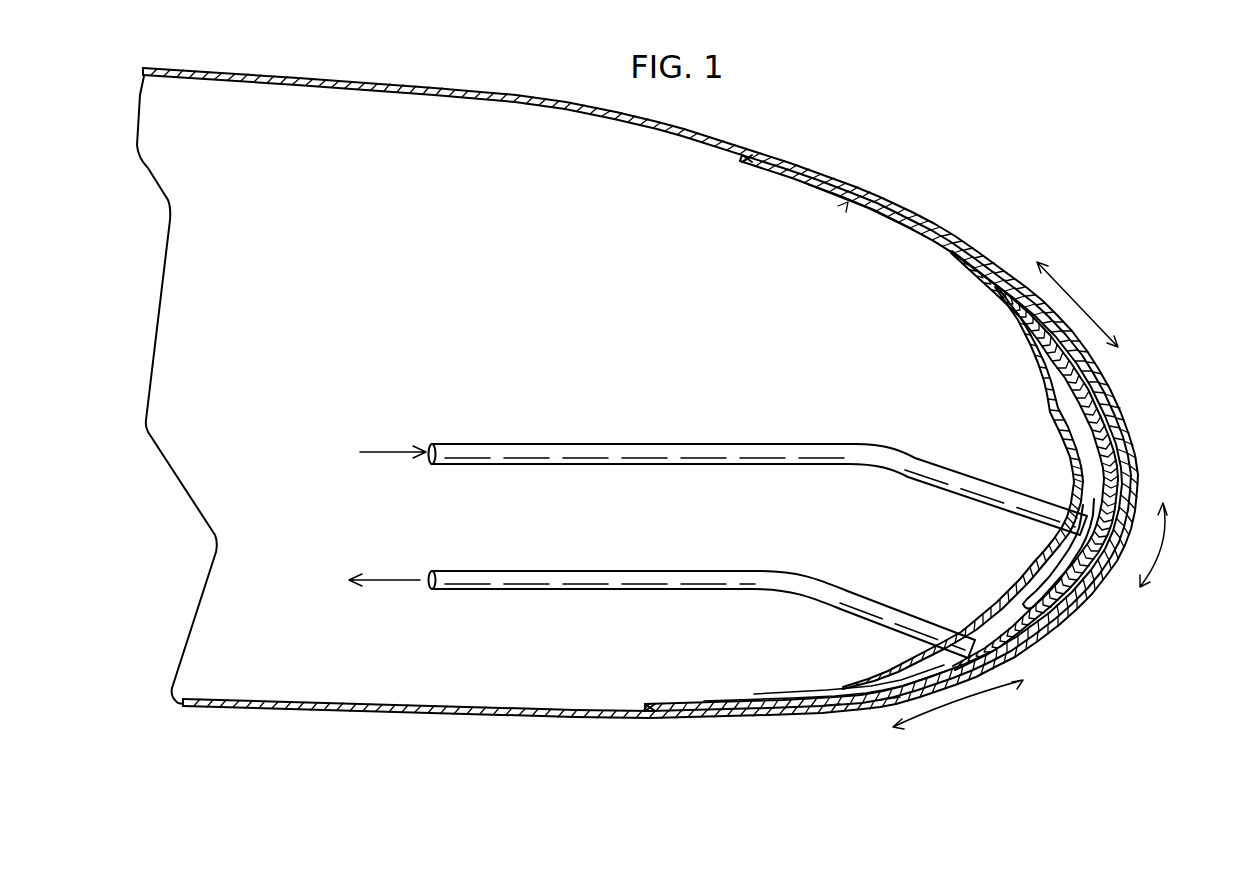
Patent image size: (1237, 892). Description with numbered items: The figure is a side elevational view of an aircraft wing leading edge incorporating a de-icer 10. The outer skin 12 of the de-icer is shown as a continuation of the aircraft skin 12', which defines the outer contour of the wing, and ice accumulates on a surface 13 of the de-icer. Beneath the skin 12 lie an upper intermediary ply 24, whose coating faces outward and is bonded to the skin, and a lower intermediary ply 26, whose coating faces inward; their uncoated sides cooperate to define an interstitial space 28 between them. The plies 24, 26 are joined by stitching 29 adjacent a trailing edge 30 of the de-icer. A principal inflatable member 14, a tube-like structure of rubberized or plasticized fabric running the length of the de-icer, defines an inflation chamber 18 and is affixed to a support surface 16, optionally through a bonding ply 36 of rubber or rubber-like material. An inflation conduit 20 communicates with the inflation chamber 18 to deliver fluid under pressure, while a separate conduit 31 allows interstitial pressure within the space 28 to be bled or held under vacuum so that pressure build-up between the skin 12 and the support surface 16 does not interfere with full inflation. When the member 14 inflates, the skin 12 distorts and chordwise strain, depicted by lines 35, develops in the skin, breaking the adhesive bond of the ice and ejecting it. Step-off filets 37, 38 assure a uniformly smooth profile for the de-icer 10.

The aircraft wing leading edge de-icer 10 is at (1155, 345).
The outer skin 12 is at (640, 393).
The aircraft skin 12' is at (644, 373).
The surface of the de-icer 13 is at (1112, 393).
The principal inflatable member 14 is at (1113, 575).
The support surface 16 is at (847, 203).
The inflation chamber 18 is at (1100, 485).
The inflation conduit 20 is at (541, 450).
The upper intermediary ply 24 is at (892, 700).
The lower intermediary ply 26 is at (1035, 343).
The interstitial space 28 is at (1020, 635).
The stitching 29 is at (1007, 293).
The trailing edge 30 is at (800, 155).
The conduit 31 is at (540, 577).
The lines depicting chordwise strain 35 is at (1078, 297).
The bonding ply 36 is at (930, 253).
The step-off filet 37 is at (1080, 398).
The step-off filet 38 is at (830, 705).